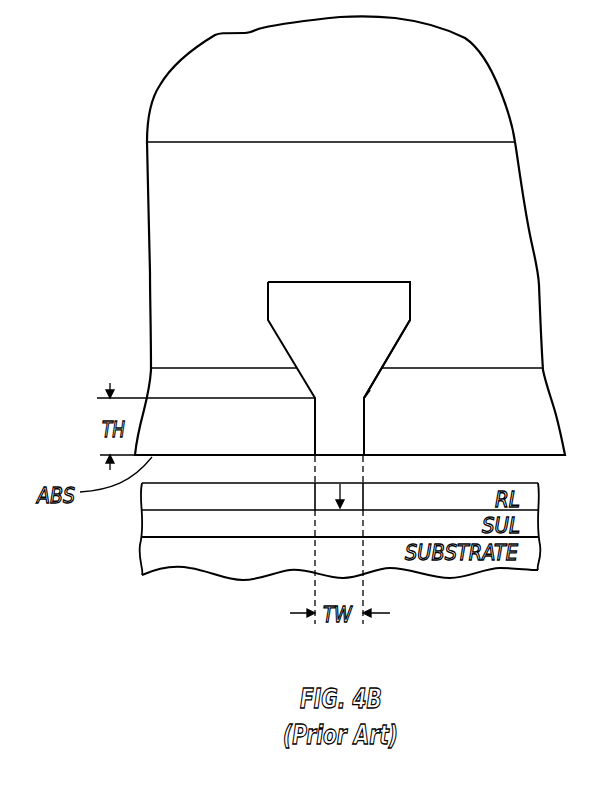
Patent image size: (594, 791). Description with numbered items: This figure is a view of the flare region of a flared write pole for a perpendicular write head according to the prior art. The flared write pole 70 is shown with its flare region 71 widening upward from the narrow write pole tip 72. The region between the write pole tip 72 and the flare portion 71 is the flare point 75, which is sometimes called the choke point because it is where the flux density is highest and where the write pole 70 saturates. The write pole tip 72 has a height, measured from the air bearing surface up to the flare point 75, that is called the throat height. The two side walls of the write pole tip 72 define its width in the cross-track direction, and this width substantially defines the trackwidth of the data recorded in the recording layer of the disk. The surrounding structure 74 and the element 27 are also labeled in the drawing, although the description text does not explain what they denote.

The write pole yoke / magnetic head body 74 is at (510, 183).
The write pole 70 is at (278, 291).
The tapered side of write pole 71 is at (367, 375).
The step at pole tip 75 is at (366, 398).
The pole tip 72 is at (320, 418).
The air bearing surface (ABS) 27 is at (260, 457).